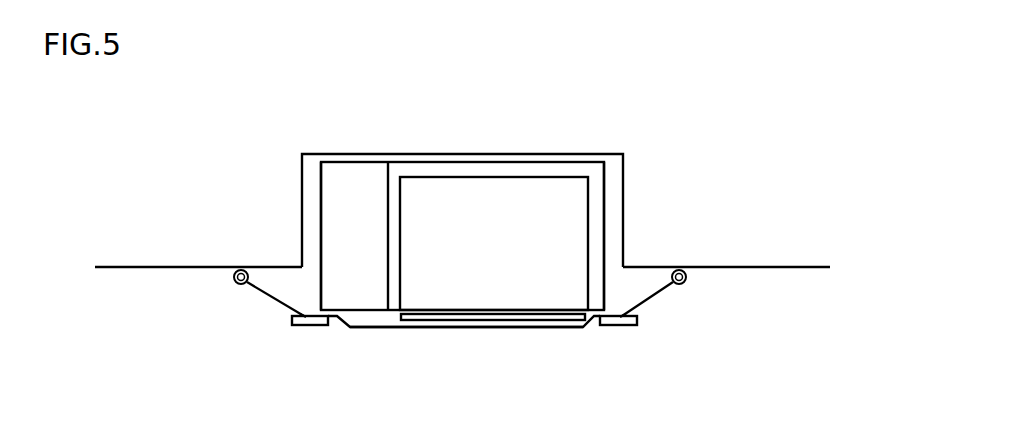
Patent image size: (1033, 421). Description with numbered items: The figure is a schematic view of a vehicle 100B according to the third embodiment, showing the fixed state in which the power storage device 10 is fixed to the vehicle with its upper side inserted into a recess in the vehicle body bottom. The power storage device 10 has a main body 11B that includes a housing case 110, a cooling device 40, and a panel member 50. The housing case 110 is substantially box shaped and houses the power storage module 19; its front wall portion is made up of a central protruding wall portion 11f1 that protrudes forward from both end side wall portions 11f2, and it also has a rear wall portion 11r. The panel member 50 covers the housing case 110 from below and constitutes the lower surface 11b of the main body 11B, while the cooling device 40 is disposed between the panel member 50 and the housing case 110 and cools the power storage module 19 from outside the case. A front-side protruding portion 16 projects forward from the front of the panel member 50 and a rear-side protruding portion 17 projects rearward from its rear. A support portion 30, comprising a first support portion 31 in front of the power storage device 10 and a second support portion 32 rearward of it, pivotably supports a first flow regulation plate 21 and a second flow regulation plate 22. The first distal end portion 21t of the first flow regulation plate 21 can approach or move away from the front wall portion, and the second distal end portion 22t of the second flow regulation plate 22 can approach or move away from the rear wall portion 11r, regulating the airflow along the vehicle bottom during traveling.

The vehicle 100B is at (712, 118).
The housing case 110 is at (447, 156).
The main body 11B is at (538, 161).
The protruding wall portion 11f1 is at (320, 177).
The both end side wall portions 11f2 is at (387, 178).
The power storage module 19 is at (500, 177).
The rear wall portion 11r is at (604, 197).
The lower surface 11b is at (457, 327).
The cooling device 40 is at (518, 320).
The panel member 50 is at (553, 327).
The front-side protruding portion 16 is at (303, 327).
The rear-side protruding portion 17 is at (612, 327).
The power storage device 10 is at (390, 343).
The support portion 30 is at (458, 194).
The first support portion 31 is at (237, 271).
The second support portion 32 is at (684, 270).
The first flow regulation plate 21 is at (278, 298).
The second flow regulation plate 22 is at (655, 296).
The first distal end portion 21t is at (303, 315).
The second distal end portion 22t is at (623, 315).